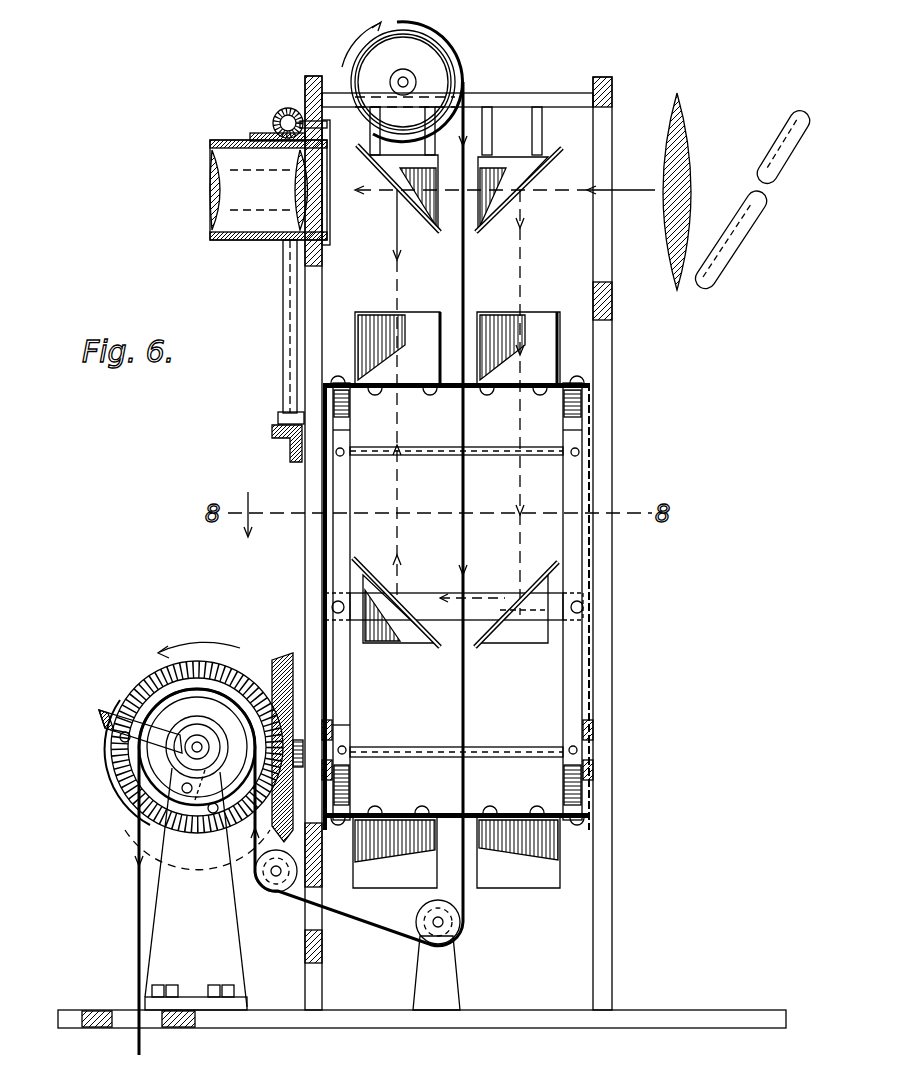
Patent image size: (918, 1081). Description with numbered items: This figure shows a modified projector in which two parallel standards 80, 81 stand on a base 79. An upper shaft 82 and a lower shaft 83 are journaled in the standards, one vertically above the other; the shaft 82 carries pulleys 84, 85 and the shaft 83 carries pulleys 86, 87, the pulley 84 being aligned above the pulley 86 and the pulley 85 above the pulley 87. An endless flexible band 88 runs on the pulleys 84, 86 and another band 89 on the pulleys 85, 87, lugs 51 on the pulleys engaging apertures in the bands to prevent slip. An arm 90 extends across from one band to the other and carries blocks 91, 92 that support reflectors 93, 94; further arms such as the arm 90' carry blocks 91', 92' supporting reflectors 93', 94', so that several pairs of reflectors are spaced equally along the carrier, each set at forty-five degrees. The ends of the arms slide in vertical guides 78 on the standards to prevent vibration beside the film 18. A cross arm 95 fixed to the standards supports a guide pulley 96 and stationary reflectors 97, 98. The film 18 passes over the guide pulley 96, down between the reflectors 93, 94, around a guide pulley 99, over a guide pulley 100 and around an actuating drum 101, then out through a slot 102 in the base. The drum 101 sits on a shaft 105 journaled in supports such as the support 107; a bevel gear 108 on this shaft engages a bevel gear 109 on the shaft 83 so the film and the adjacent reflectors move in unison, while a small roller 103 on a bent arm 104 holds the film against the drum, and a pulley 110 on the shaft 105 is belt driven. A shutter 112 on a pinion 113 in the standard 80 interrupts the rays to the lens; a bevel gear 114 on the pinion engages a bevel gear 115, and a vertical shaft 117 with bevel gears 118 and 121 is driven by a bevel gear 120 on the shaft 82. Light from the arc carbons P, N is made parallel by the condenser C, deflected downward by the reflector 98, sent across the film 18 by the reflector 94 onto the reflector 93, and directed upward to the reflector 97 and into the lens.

The film 18 is at (462, 712).
The lugs 51 is at (343, 456).
The vertical guides 78 is at (330, 578).
The base 79 is at (505, 1012).
The standard 80 is at (320, 550).
The standard 81 is at (606, 656).
The shaft 82 is at (428, 447).
The shaft 83 is at (530, 744).
The pulley 84 is at (350, 442).
The pulley 85 is at (567, 412).
The pulley 86 is at (338, 797).
The pulley 87 is at (565, 780).
The endless flexible band 88 is at (345, 726).
The endless flexible band 89 is at (590, 582).
The arm 90 is at (454, 591).
The arm 90' is at (457, 808).
The block or frame 91 is at (396, 616).
The block 91' is at (379, 901).
The block or frame 92 is at (516, 619).
The block 92' is at (544, 902).
The reflector 93 is at (416, 584).
The reflector 93' is at (395, 853).
The reflector 94 is at (535, 574).
The reflector 94' is at (518, 853).
The cross arm 95 is at (570, 102).
The guide pulley 96 is at (402, 82).
The stationary reflector 97 is at (412, 205).
The stationary reflector 98 is at (536, 172).
The guide pulley 99 is at (422, 936).
The guide pulley 100 is at (278, 892).
The actuating drum 101 is at (222, 718).
The slot 102 is at (130, 1008).
The small roller 103 is at (130, 690).
The bent arm 104 is at (118, 776).
The shaft 105 is at (200, 762).
The support 107 is at (196, 964).
The bevel gear 108 is at (192, 668).
The bevel gear 109 is at (283, 656).
The pulley 110 is at (100, 730).
The shutter 112 is at (326, 228).
The pinion 113 is at (313, 78).
The bevel gear 114 is at (303, 118).
The bevel gear 115 is at (280, 116).
The vertical shaft 117 is at (284, 312).
The bevel gear 118 is at (268, 136).
The bevel gear 120 is at (287, 458).
The bevel gear 121 is at (278, 418).
The lamp L is at (268, 190).
The condenser C is at (692, 172).
The carbon P is at (786, 140).
The carbon N is at (745, 242).